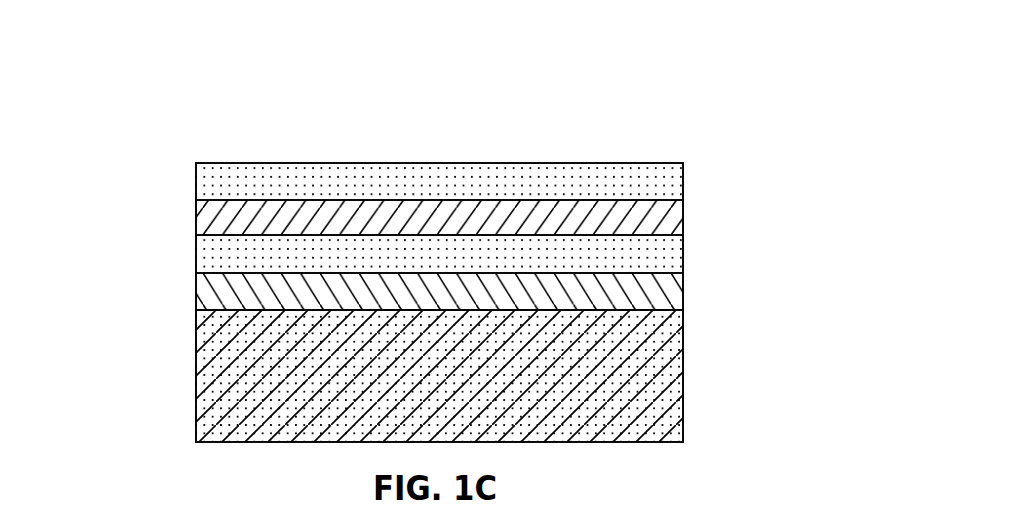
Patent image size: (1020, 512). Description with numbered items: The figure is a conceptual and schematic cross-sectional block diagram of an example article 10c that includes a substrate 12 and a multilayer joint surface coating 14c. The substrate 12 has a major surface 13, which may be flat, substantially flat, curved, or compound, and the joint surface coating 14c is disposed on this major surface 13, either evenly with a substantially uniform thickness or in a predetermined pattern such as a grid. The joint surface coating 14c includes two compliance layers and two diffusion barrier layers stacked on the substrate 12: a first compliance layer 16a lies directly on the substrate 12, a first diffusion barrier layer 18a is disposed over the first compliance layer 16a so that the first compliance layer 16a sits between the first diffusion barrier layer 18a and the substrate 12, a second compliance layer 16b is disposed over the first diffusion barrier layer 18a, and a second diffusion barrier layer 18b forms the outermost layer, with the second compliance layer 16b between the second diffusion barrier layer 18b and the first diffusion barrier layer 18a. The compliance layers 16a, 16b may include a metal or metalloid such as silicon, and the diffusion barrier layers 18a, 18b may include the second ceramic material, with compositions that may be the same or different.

The article 10c is at (120, 92).
The substrate 12 is at (683, 387).
The major surface 13 is at (420, 307).
The joint surface coating 14c is at (180, 166).
The first compliance layer 16a is at (683, 287).
The second compliance layer 16b is at (683, 217).
The first diffusion barrier layer 18a is at (683, 247).
The second diffusion barrier layer 18b is at (683, 177).